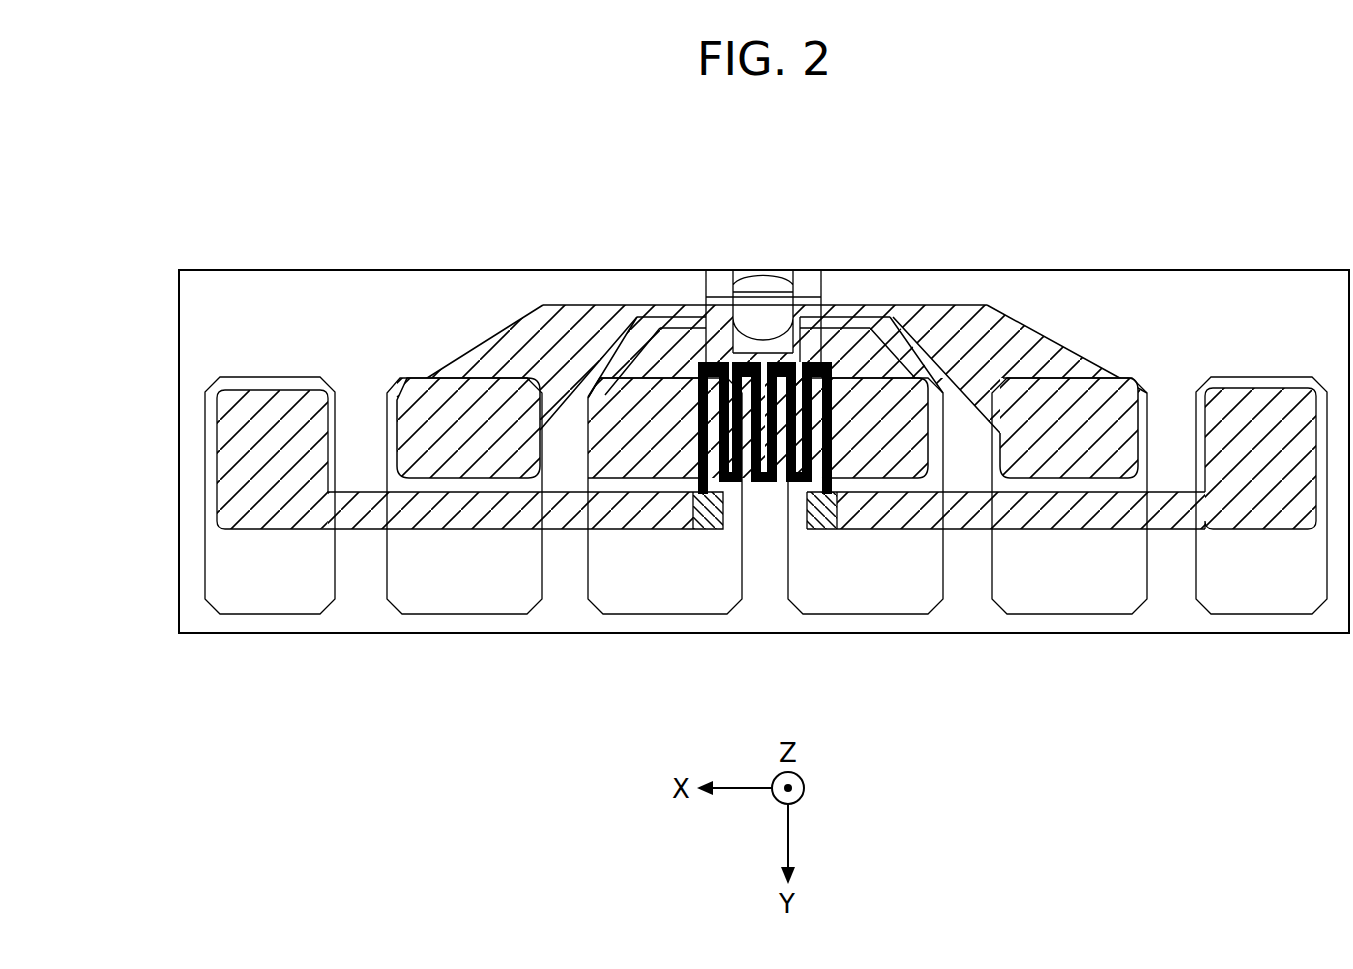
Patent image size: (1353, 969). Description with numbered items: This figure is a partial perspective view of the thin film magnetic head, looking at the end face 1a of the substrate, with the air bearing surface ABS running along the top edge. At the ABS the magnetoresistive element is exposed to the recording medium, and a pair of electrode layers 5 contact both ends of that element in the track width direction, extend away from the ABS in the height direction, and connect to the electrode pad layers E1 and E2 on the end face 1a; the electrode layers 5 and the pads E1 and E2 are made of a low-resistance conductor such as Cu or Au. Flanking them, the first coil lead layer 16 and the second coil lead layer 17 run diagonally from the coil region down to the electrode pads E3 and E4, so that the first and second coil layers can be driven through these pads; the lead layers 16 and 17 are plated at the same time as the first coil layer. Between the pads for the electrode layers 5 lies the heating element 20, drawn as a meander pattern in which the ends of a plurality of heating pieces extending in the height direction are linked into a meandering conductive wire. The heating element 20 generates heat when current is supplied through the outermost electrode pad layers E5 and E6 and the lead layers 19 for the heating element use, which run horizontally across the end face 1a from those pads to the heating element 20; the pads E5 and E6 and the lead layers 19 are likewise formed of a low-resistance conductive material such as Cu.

The end face 1a is at (1210, 330).
The air bearing surface ABS is at (988, 268).
The first coil lead layer 16 is at (502, 352).
The second coil lead layer 17 is at (1045, 352).
The electrode layers 5 is at (650, 352).
The lead layers for the heating element use 19 is at (360, 530).
The heating element 20 is at (760, 512).
The electrode pad layer E1 is at (643, 595).
The electrode pad layer E2 is at (890, 597).
The electrode pad E3 is at (462, 592).
The electrode pad E4 is at (1073, 598).
The electrode pad layer E5 is at (270, 592).
The electrode pad layer E6 is at (1262, 593).